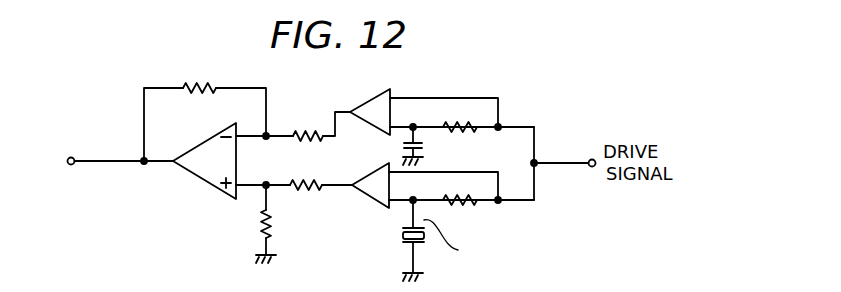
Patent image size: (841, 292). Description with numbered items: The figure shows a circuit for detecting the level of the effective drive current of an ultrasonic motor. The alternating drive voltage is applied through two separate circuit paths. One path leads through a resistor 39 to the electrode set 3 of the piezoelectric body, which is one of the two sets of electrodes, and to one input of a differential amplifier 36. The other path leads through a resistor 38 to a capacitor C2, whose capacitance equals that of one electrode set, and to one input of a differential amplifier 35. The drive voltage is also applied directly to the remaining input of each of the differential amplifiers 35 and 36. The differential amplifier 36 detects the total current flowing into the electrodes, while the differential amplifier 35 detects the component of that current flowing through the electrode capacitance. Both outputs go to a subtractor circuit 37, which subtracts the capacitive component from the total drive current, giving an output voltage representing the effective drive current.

The electrode set 3 is at (402, 236).
The differential amplifier 35 is at (370, 100).
The differential amplifier 36 is at (367, 196).
The subtractor circuit 37 is at (195, 175).
The resistor 38 is at (458, 130).
The resistor 39 is at (466, 205).
The capacitor C2 is at (427, 146).